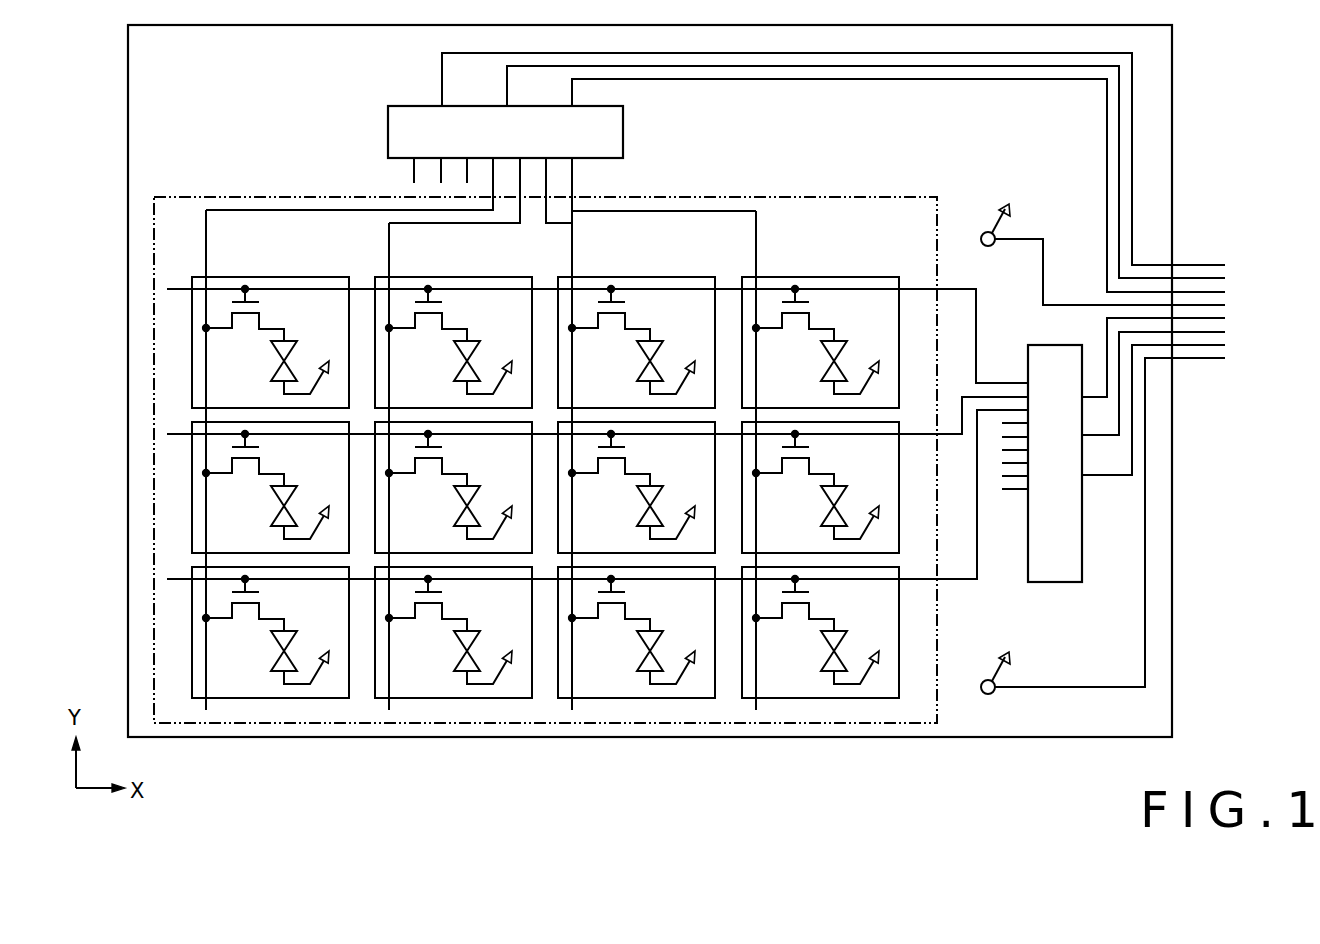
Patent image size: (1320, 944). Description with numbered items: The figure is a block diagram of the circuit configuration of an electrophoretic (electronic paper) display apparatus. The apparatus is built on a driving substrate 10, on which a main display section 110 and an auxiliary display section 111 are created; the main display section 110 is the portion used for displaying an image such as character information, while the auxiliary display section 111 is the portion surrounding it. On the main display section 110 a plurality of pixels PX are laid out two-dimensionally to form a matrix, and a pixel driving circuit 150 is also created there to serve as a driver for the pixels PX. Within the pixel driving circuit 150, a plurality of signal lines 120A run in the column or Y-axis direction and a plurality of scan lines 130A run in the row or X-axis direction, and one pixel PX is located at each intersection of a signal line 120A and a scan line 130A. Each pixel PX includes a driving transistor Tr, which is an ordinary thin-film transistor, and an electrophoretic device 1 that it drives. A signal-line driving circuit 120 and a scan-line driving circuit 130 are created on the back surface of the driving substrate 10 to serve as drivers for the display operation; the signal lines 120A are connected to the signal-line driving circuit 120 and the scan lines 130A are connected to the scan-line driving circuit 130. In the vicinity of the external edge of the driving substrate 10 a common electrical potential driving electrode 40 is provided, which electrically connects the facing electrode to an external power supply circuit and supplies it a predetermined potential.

The electrophoretic device 1 is at (470, 673).
The driving substrate 10 is at (1105, 740).
The driving electrode 40 is at (1118, 687).
The main display section 110 is at (340, 723).
The auxiliary display section 111 is at (208, 731).
The signal-line driving circuit 120 is at (623, 130).
The signal line 120A is at (206, 237).
The scan-line driving circuit 130 is at (1055, 583).
The scan line 130A is at (965, 583).
The pixel driving circuit 150 is at (844, 707).
The driving transistor Tr is at (612, 620).
The pixel PX is at (680, 698).